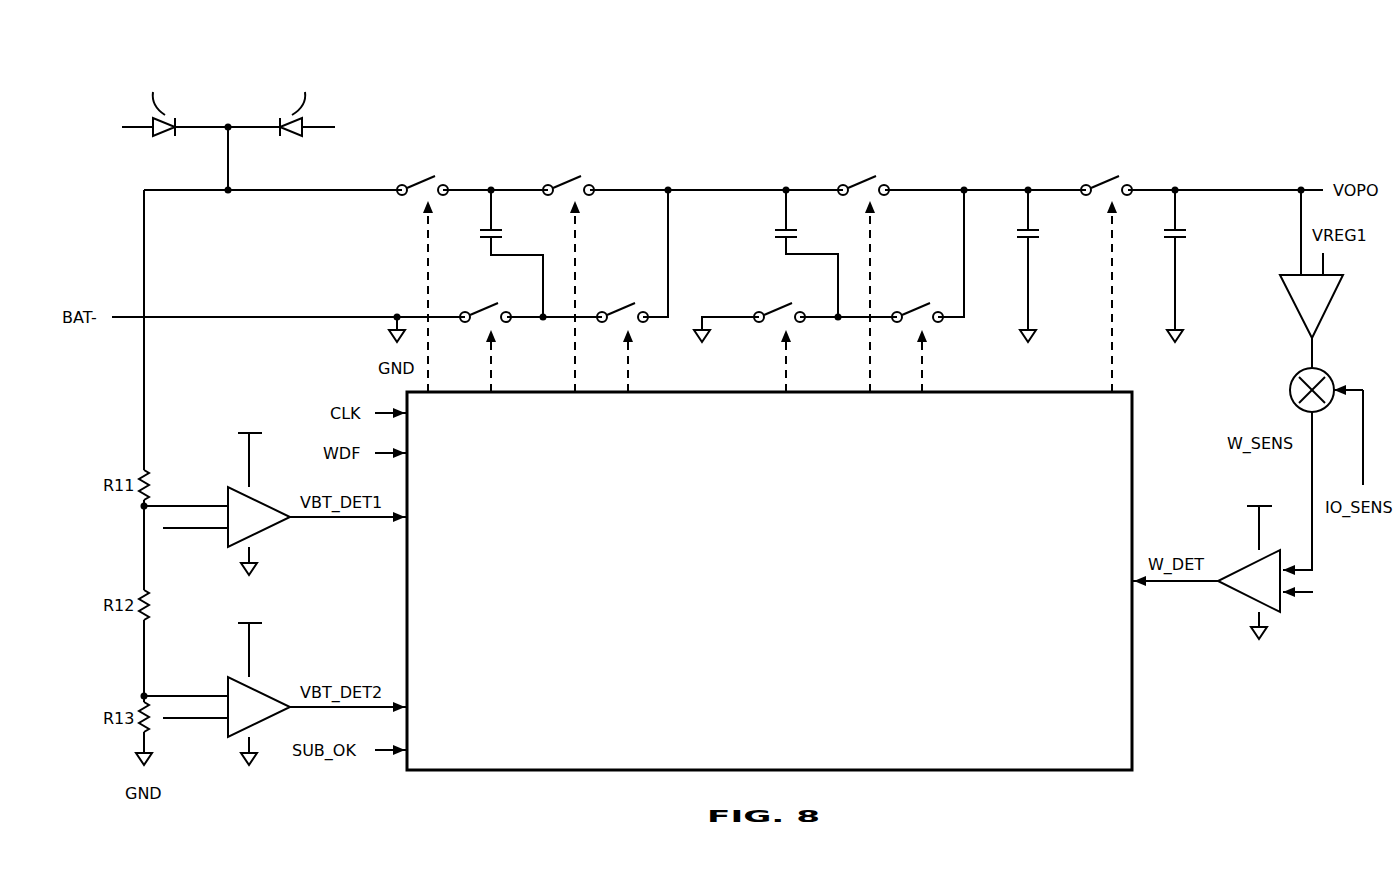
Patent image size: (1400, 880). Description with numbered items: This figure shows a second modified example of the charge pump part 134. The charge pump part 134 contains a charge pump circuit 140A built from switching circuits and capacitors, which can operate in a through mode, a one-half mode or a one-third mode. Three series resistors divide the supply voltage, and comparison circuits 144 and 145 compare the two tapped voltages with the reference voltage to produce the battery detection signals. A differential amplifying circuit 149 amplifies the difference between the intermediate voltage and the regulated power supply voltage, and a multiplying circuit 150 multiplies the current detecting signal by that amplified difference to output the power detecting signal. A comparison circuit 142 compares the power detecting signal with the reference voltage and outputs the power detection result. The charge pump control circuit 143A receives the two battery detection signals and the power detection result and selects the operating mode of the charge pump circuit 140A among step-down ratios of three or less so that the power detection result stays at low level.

The charge pump part 134 is at (500, 95).
The charge pump circuit 140A is at (1016, 156).
The W_DET comparator 142 is at (1249, 564).
The charge pump control circuit 143A is at (1134, 697).
The comparison circuit 144 is at (258, 496).
The comparison circuit 145 is at (258, 686).
The differential amplifying circuit 149 is at (1292, 308).
The multiplying circuit 150 is at (1288, 387).